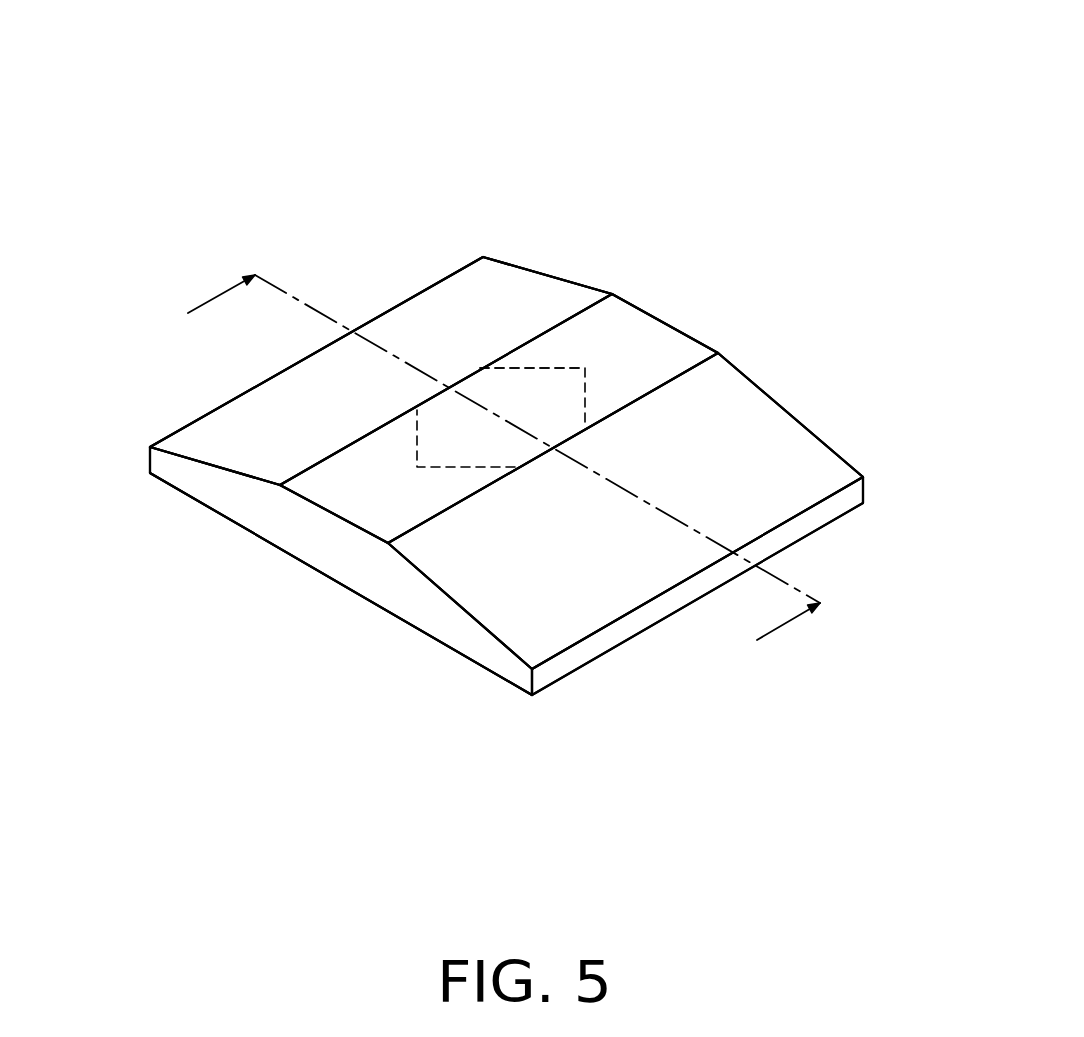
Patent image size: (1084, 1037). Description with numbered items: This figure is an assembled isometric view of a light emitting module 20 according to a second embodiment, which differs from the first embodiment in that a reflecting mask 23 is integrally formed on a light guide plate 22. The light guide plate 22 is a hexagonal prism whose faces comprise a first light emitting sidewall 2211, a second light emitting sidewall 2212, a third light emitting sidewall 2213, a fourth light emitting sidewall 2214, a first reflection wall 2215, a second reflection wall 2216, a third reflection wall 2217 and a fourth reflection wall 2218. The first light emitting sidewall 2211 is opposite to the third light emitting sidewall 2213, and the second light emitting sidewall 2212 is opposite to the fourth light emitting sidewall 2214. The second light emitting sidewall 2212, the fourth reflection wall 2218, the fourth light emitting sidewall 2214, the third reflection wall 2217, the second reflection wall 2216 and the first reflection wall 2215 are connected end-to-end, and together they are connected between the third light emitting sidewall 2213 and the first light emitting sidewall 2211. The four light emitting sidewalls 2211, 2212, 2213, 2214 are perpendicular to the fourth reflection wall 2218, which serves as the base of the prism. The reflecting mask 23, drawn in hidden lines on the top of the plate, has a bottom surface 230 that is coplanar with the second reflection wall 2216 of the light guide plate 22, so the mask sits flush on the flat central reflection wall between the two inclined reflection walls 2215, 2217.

The light emitting module 20 is at (485, 43).
The light guide plate 22 is at (787, 443).
The reflecting mask 23 is at (590, 378).
The bottom surface 230 is at (523, 383).
The first light emitting sidewall 2211 is at (751, 379).
The second light emitting sidewall 2212 is at (403, 302).
The third light emitting sidewall 2213 is at (395, 595).
The fourth light emitting sidewall 2214 is at (587, 645).
The first reflection wall 2215 is at (235, 437).
The second reflection wall 2216 is at (363, 500).
The third reflection wall 2217 is at (642, 568).
The fourth reflection wall 2218 is at (447, 648).